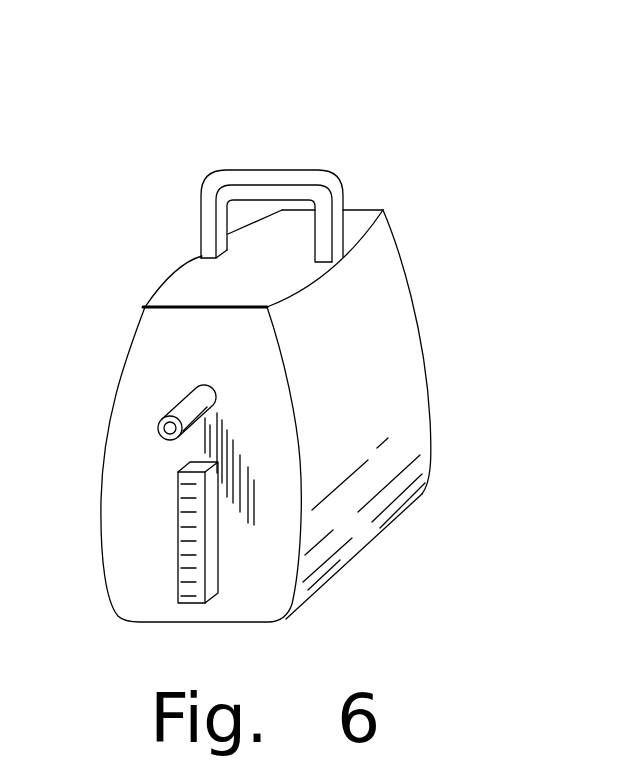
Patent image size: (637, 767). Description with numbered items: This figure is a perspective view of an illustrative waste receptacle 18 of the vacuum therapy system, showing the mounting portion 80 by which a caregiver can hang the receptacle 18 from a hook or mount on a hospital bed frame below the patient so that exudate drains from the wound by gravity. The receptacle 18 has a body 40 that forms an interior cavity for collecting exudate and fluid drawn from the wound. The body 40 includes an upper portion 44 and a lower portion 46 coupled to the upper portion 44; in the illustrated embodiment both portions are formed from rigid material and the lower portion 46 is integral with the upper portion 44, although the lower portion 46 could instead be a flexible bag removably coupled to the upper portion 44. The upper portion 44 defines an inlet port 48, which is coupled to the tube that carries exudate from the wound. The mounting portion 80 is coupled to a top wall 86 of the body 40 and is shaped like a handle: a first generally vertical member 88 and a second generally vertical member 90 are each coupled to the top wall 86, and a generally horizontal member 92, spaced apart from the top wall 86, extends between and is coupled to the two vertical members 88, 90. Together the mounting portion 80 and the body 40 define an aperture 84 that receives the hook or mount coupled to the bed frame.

The receptacle 18 is at (287, 322).
The body 40 is at (392, 415).
The upper portion 44 is at (343, 322).
The lower portion 46 is at (340, 518).
The inlet port 48 is at (170, 408).
The mounting portion 80 is at (296, 181).
The aperture 84 is at (258, 212).
The top wall 86 is at (360, 223).
The first generally vertical member 88 is at (340, 245).
The second generally vertical member 90 is at (213, 203).
The generally horizontal member 92 is at (270, 188).